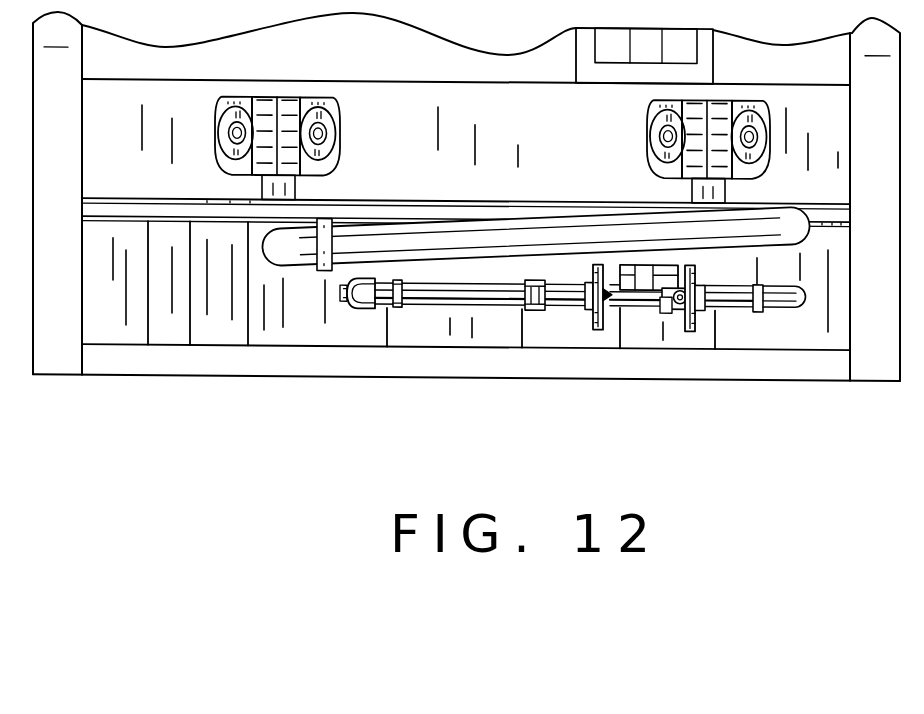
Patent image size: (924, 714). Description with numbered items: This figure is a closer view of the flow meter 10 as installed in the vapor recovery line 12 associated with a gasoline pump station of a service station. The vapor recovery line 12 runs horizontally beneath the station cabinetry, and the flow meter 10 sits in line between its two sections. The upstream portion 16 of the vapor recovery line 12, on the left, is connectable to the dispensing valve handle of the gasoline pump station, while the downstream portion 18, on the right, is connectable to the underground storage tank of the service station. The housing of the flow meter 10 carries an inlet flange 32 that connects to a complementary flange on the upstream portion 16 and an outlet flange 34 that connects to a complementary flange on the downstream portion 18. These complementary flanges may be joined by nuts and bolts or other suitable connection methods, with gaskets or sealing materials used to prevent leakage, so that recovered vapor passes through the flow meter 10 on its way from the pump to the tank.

The flow meter 10 is at (645, 306).
The vapor recovery line 12 is at (777, 305).
The upstream portion 16 is at (472, 293).
The downstream portion 18 is at (733, 296).
The inlet flange 32 is at (592, 312).
The outlet flange 34 is at (697, 315).